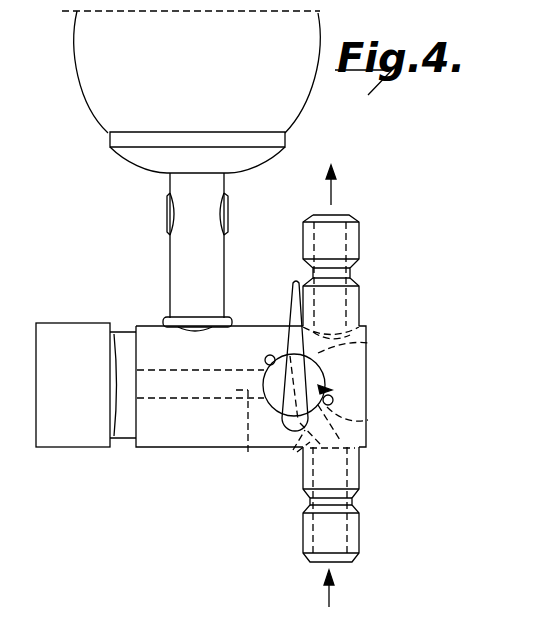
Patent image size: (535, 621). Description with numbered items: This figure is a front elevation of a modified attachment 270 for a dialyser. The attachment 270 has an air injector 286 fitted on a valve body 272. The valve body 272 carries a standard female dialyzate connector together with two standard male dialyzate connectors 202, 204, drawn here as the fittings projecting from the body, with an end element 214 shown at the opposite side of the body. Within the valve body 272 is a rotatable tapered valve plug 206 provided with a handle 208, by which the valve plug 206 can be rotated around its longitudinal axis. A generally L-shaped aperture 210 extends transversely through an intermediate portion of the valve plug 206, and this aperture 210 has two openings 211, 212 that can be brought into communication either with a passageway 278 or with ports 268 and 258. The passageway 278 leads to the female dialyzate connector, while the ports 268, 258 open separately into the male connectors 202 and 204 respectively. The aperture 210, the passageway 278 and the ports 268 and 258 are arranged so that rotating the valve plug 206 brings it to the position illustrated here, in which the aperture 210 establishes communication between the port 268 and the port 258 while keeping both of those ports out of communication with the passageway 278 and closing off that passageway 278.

The male dialyzate connector 202 is at (350, 463).
The male dialyzate connector 204 is at (347, 242).
The tapered valve plug 206 is at (326, 377).
The handle 208 is at (294, 304).
The L-shaped aperture 210 is at (334, 401).
The opening 211 is at (328, 355).
The opening 212 is at (340, 420).
The end cap 214 is at (125, 428).
The port 258 is at (327, 336).
The port 268 is at (293, 450).
The attachment 270 is at (156, 265).
The valve body 272 is at (198, 438).
The passageway 278 is at (204, 431).
The air injector 286 is at (268, 118).